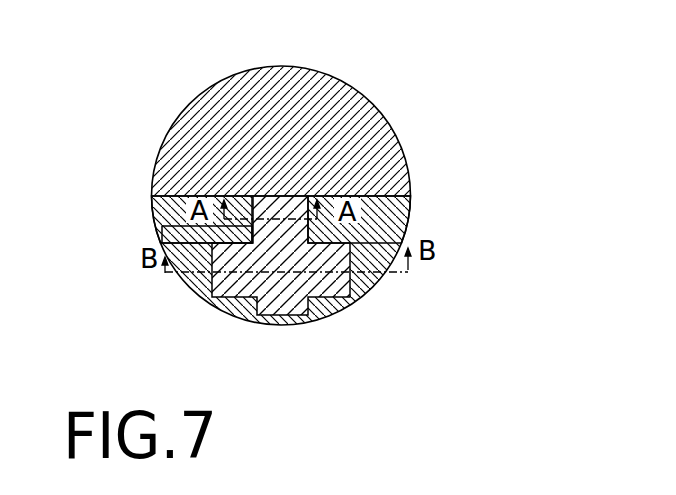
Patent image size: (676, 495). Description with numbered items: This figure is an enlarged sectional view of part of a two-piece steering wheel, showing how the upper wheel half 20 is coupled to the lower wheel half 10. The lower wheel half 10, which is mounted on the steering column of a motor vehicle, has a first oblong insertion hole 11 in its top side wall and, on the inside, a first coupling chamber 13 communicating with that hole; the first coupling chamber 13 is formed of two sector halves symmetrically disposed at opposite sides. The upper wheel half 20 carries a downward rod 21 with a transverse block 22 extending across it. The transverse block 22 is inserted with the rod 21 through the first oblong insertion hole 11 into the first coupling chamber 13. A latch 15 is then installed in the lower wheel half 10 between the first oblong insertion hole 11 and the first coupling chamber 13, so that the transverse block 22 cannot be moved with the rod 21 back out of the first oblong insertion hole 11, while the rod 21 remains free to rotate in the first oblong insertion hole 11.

The lower wheel half 10 is at (318, 310).
The first oblong insertion hole 11 is at (197, 222).
The first coupling chamber 13 is at (190, 287).
The latch 15 is at (194, 236).
The upper wheel half 20 is at (260, 100).
The rod 21 is at (295, 232).
The transverse block 22 is at (320, 272).